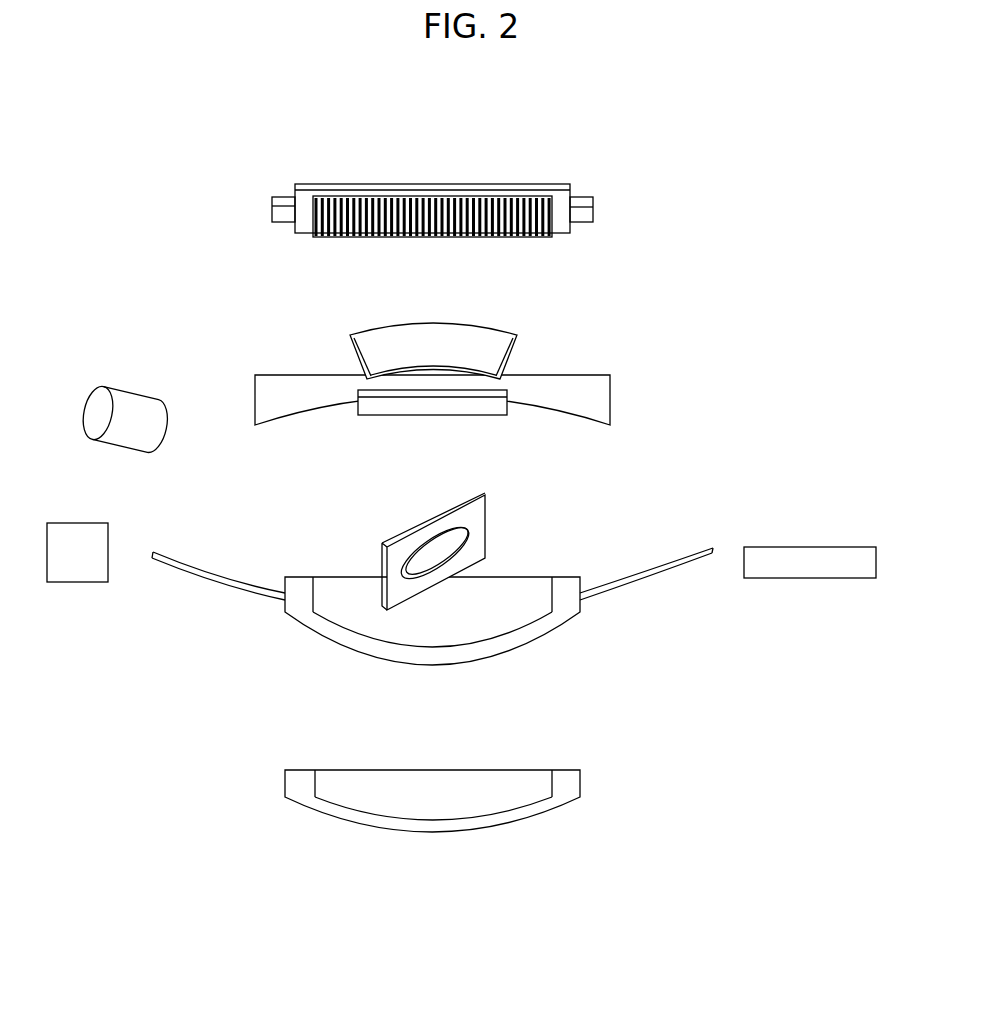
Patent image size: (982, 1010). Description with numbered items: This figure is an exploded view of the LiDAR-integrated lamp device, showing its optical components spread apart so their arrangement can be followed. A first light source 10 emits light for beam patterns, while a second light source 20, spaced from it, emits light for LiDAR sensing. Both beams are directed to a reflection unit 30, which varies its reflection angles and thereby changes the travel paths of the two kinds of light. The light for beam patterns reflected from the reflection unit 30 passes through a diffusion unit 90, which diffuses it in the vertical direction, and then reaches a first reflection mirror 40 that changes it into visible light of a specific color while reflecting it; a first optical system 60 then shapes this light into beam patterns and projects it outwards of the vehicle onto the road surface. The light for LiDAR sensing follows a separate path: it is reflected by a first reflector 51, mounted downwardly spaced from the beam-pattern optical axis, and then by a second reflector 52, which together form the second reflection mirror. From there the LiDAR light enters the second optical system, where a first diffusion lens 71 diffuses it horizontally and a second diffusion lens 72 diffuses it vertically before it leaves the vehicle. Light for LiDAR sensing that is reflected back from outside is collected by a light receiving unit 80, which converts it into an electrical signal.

The first light source 10 is at (75, 567).
The second light source 20 is at (126, 397).
The reflection unit 30 is at (478, 538).
The first reflection mirror 40 is at (423, 197).
The first reflector 51 is at (508, 336).
The second reflector 52 is at (282, 200).
The first optical system 60 is at (318, 625).
The first diffusion lens 71 is at (604, 392).
The second diffusion lens 72 is at (658, 580).
The light receiving unit 80 is at (812, 553).
The diffusion unit 90 is at (493, 405).